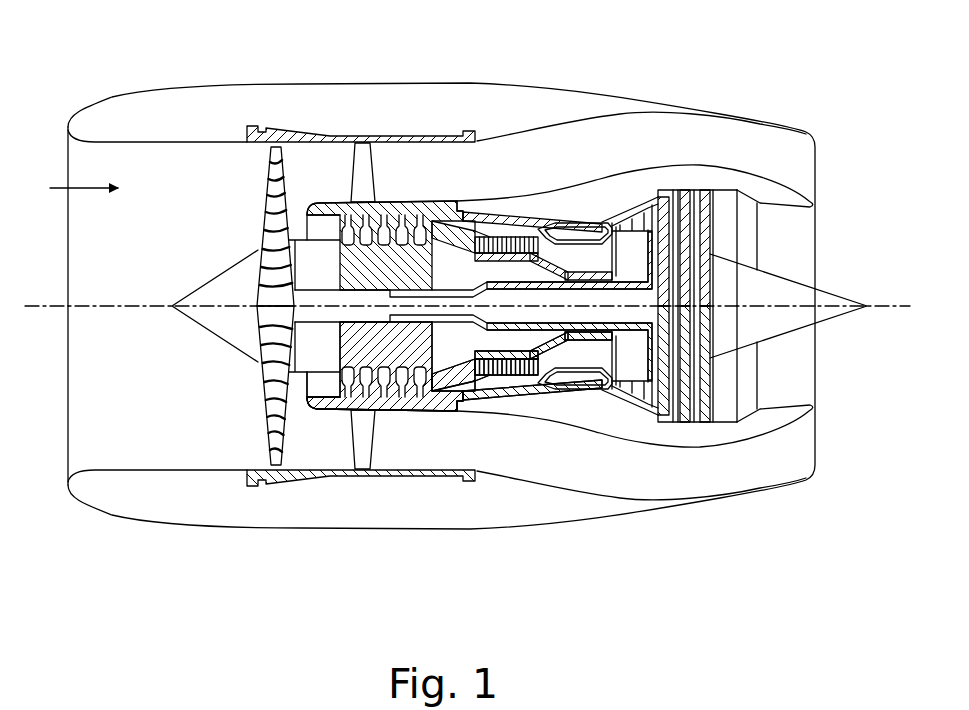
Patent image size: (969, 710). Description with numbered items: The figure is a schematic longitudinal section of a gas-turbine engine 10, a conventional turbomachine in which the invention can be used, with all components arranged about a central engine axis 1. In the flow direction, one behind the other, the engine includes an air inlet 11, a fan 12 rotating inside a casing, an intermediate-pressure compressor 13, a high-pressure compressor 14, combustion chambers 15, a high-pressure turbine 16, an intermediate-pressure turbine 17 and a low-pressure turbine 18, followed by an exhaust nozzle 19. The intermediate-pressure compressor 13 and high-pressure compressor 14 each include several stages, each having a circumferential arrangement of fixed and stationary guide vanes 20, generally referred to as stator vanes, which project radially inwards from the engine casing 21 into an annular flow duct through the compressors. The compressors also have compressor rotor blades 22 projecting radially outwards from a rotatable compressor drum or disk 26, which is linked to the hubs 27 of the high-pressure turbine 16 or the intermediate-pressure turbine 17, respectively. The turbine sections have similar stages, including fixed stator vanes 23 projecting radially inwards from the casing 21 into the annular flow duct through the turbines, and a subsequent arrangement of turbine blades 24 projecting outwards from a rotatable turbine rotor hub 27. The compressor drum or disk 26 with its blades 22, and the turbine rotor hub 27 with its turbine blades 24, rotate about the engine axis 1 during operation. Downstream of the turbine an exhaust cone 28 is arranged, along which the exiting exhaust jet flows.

The engine axis 1 is at (133, 307).
The gas-turbine engine 10 is at (603, 140).
The air inlet 11 is at (208, 181).
The fan 12 is at (277, 145).
The intermediate-pressure compressor 13 is at (415, 218).
The high-pressure compressor 14 is at (521, 236).
The combustion chambers 15 is at (572, 238).
The high-pressure turbine 16 is at (608, 208).
The intermediate-pressure turbine 17 is at (686, 202).
The low-pressure turbine 18 is at (712, 192).
The exhaust nozzle 19 is at (745, 243).
The guide vanes 20 is at (350, 408).
The engine casing 21 is at (378, 410).
The compressor rotor blades 22 is at (401, 410).
The stator vanes 23 is at (700, 357).
The turbine blades 24 is at (663, 320).
The compressor drum or disk 26 is at (557, 350).
The turbine rotor hub 27 is at (645, 355).
The exhaust cone 28 is at (822, 298).